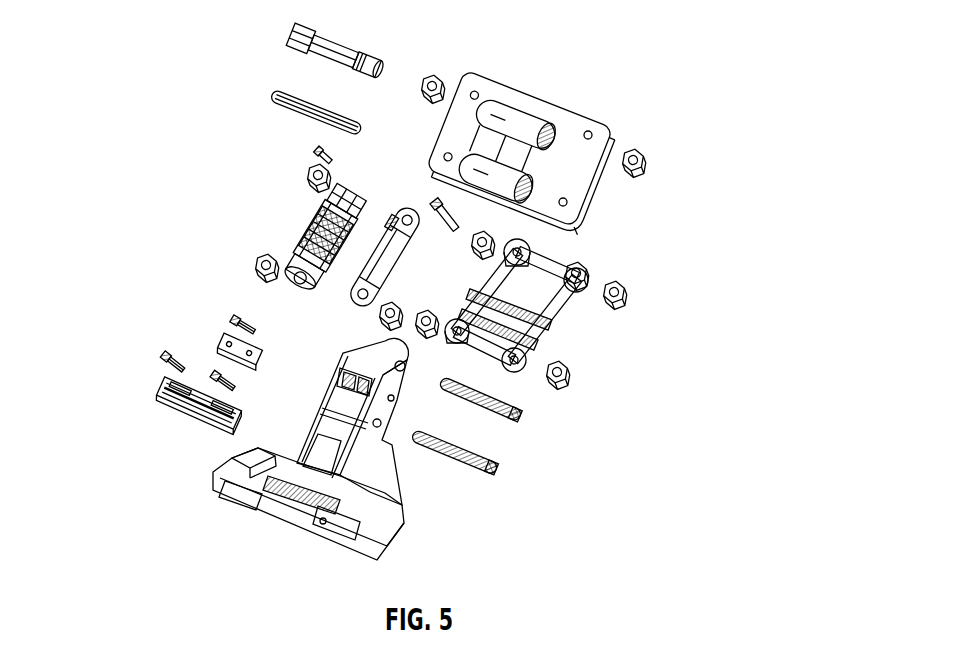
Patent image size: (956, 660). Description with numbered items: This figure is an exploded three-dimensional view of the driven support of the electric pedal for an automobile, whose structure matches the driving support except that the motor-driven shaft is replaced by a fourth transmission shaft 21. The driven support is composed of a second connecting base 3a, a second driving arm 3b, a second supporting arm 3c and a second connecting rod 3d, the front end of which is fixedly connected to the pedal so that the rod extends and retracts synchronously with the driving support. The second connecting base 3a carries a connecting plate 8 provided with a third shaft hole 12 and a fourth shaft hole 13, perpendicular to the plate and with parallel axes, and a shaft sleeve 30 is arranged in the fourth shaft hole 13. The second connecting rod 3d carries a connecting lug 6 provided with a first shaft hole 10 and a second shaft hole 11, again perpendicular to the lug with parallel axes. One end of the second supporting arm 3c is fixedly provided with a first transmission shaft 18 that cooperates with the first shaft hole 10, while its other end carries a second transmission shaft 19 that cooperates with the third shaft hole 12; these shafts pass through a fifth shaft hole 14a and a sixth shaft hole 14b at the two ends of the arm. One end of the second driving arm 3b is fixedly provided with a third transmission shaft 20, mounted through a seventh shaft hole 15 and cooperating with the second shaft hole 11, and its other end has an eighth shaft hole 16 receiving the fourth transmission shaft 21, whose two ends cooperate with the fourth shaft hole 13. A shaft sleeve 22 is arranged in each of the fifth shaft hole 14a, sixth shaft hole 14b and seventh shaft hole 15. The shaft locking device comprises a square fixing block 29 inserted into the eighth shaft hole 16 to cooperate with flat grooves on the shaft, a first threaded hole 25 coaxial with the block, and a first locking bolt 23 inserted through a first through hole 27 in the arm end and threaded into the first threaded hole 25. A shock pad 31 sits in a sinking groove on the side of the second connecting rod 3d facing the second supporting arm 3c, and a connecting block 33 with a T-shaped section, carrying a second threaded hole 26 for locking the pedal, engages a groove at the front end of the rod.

The second connecting base 3a is at (588, 131).
The second driving arm 3b is at (275, 283).
The second supporting arm 3c is at (584, 307).
The second connecting rod 3d is at (426, 458).
The connecting lug 6 is at (395, 403).
The connecting plate 8 is at (528, 112).
The first shaft hole 10 is at (380, 430).
The second shaft hole 11 is at (405, 366).
The third shaft hole 12 is at (567, 202).
The fourth shaft hole 13 is at (591, 133).
The fifth shaft hole 14a is at (573, 372).
The sixth shaft hole 14b is at (593, 277).
The seventh shaft hole 15 is at (375, 316).
The eighth shaft hole 16 is at (440, 236).
The first transmission shaft 18 is at (499, 468).
The second transmission shaft 19 is at (297, 118).
The third transmission shaft 20 is at (530, 418).
The fourth transmission shaft 21 is at (327, 50).
The shaft sleeve 22 is at (623, 305).
The first locking bolt 23 is at (317, 152).
The first threaded hole 25 is at (303, 177).
The second threaded hole 26 is at (198, 412).
The first through hole 27 is at (302, 205).
The square fixing block 29 is at (250, 247).
The shaft sleeve 30 is at (636, 142).
The shock pad 31 is at (220, 342).
The connecting block 33 is at (141, 442).